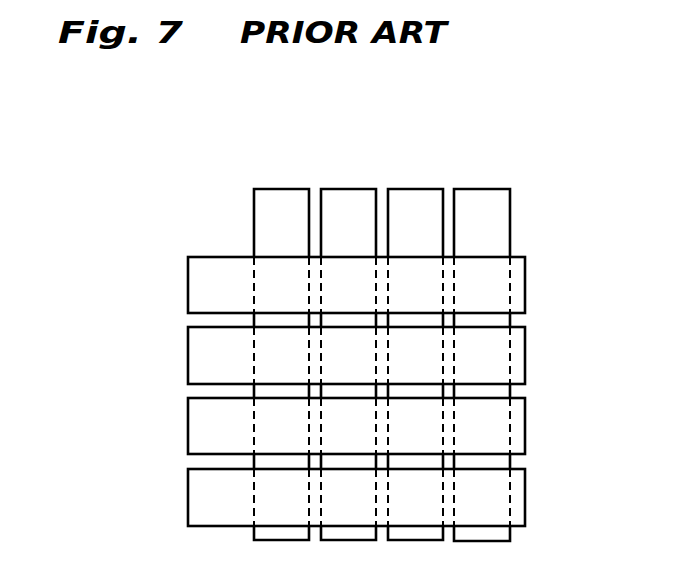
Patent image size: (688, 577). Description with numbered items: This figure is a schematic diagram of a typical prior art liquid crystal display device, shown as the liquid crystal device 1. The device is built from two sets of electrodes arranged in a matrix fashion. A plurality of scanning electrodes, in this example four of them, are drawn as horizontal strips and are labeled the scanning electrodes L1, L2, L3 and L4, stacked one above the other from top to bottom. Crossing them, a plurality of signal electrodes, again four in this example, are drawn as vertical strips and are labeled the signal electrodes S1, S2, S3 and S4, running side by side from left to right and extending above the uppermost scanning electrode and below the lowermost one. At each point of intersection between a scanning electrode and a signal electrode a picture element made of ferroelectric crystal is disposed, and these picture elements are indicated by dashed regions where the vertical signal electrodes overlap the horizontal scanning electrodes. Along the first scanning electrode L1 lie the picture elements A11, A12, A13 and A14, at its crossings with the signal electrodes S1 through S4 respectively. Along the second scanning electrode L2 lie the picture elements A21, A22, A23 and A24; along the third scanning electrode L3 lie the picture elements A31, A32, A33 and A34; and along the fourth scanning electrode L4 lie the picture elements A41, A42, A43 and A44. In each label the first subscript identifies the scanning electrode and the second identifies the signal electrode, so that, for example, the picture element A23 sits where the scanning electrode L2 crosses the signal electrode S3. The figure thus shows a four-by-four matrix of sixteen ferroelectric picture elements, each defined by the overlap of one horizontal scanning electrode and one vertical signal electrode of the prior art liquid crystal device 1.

The liquid crystal device 1 is at (542, 166).
The signal electrode S1 is at (285, 202).
The signal electrode S2 is at (352, 202).
The signal electrode S3 is at (419, 202).
The signal electrode S4 is at (486, 202).
The scanning electrode L1 is at (203, 289).
The scanning electrode L2 is at (203, 358).
The scanning electrode L3 is at (201, 432).
The scanning electrode L4 is at (203, 502).
The picture element A11 is at (281, 285).
The picture element A12 is at (348, 285).
The picture element A13 is at (415, 285).
The picture element A14 is at (482, 285).
The picture element A21 is at (281, 355).
The picture element A22 is at (348, 355).
The picture element A23 is at (415, 355).
The picture element A24 is at (482, 355).
The picture element A31 is at (281, 426).
The picture element A32 is at (348, 426).
The picture element A33 is at (415, 426).
The picture element A34 is at (482, 426).
The picture element A41 is at (281, 497).
The picture element A42 is at (348, 497).
The picture element A43 is at (415, 497).
The picture element A44 is at (482, 497).